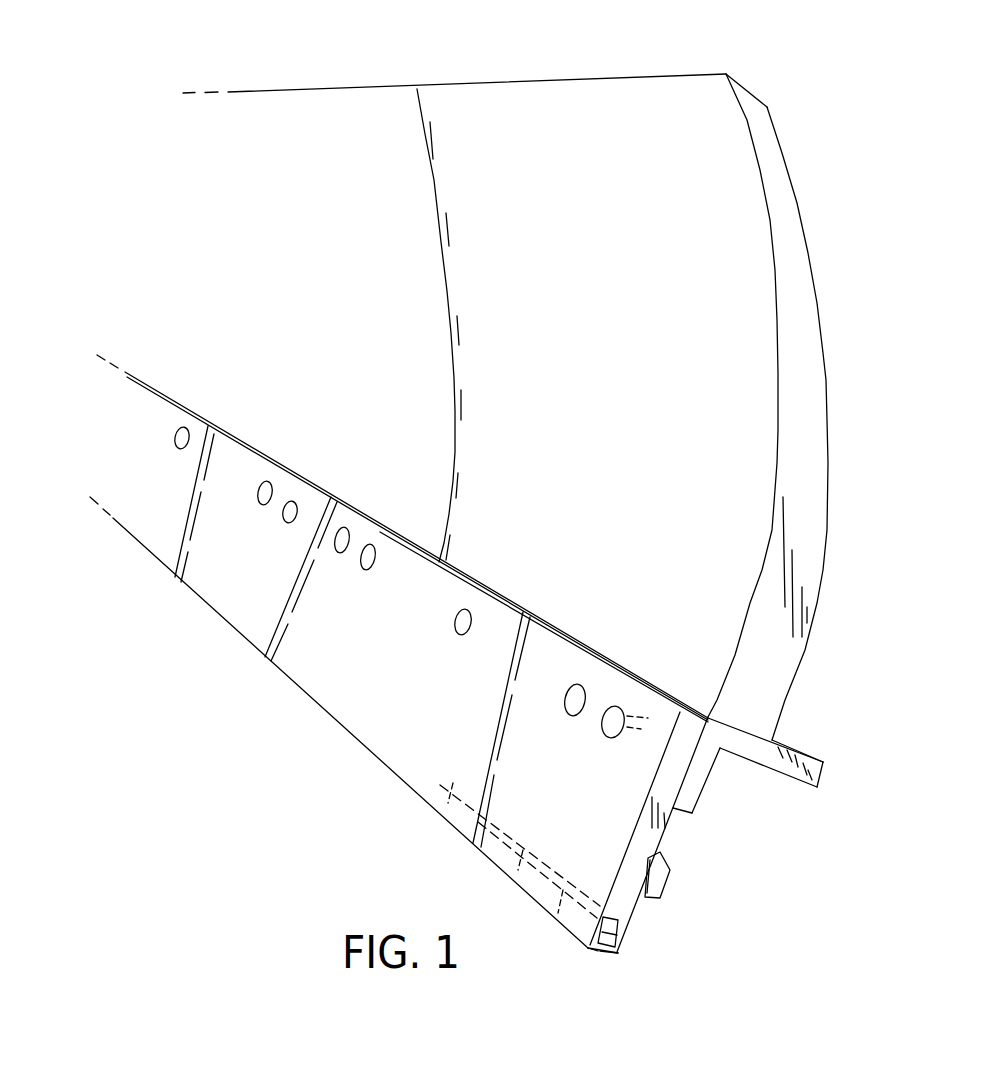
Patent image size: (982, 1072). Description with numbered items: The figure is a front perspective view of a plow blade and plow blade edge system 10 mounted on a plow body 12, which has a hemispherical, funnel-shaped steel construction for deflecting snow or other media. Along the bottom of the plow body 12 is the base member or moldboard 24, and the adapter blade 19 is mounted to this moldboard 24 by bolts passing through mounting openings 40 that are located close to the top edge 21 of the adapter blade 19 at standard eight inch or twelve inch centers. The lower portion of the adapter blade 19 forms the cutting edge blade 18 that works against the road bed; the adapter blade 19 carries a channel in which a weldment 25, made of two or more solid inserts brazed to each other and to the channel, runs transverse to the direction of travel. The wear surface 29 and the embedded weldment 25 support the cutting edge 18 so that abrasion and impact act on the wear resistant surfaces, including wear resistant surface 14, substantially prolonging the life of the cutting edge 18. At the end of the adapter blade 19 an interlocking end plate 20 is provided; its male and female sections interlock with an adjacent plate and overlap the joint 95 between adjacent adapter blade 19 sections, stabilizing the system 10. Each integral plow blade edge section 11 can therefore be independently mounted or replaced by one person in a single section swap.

The plow blade edge system 10 is at (90, 212).
The integral plow blade edge section 11 is at (298, 703).
The plow body 12 is at (562, 113).
The wear resistant surface 14 is at (612, 955).
The edge blade 18 is at (483, 858).
The adapter blade 19 is at (202, 588).
The interlocking end plate 20 is at (670, 883).
The top edge 21 is at (560, 633).
The moldboard 24 is at (746, 748).
The weldment 25 is at (598, 955).
The wear surface 29 is at (602, 955).
The mounting openings 40 is at (368, 544).
The joint 95 is at (278, 618).